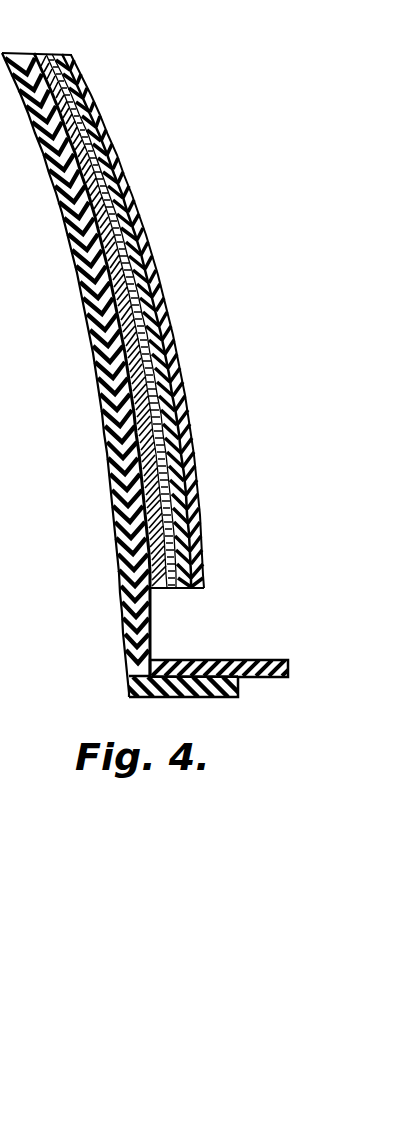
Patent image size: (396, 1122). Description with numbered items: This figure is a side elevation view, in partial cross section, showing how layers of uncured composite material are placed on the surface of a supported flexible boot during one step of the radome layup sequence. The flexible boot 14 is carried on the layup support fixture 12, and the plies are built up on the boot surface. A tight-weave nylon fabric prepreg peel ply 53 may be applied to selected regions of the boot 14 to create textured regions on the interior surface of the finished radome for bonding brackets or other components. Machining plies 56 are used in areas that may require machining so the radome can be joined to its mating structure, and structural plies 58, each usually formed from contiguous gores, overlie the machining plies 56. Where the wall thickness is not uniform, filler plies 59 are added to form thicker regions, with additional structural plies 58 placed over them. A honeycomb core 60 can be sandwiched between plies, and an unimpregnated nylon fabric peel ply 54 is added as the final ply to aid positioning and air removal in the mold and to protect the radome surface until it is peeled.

The layup support fixture 12 is at (140, 637).
The flexible boot 14 is at (277, 660).
The prepreg peel ply 53 is at (107, 306).
The peel ply 54 is at (114, 147).
The machining plies 56 is at (157, 553).
The structural plies 58 is at (33, 53).
The filler plies 59 is at (180, 588).
The honeycomb core 60 is at (133, 234).